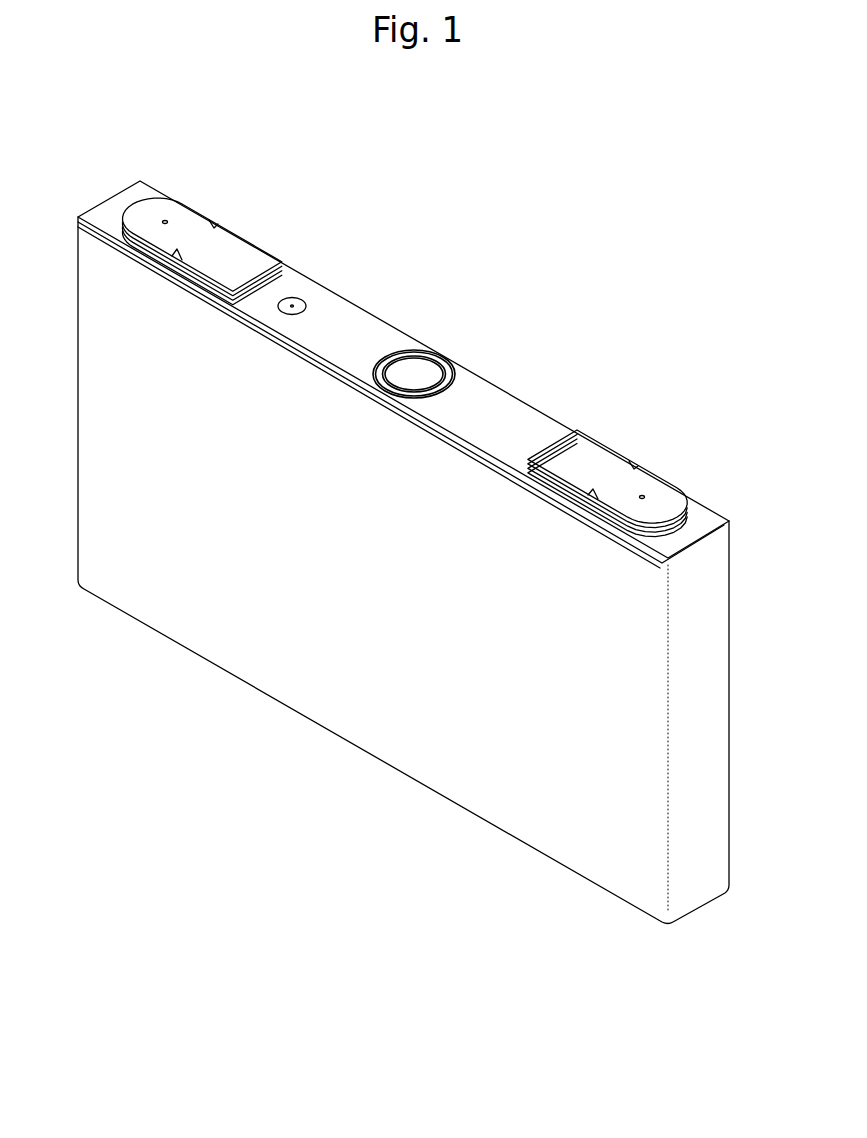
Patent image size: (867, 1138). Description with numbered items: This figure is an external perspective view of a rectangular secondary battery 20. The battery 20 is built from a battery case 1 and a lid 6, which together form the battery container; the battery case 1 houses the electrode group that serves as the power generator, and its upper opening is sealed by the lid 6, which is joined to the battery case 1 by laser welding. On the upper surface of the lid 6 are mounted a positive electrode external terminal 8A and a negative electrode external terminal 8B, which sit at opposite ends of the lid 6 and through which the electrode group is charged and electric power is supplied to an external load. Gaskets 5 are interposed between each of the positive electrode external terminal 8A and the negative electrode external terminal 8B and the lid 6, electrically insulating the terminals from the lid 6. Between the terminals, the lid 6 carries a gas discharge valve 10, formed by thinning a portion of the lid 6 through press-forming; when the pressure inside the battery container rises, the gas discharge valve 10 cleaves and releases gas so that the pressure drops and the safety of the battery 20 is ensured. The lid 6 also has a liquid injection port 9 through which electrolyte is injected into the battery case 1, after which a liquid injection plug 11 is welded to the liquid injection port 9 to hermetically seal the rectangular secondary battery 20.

The battery case 1 is at (258, 603).
The gaskets 5 is at (127, 222).
The lid 6 is at (353, 323).
The positive electrode external terminal 8A is at (578, 458).
The negative electrode external terminal 8B is at (185, 224).
The liquid injection port 9 is at (302, 297).
The gas discharge valve 10 is at (429, 351).
The liquid injection plug 11 is at (292, 303).
The rectangular secondary battery 20 is at (611, 303).